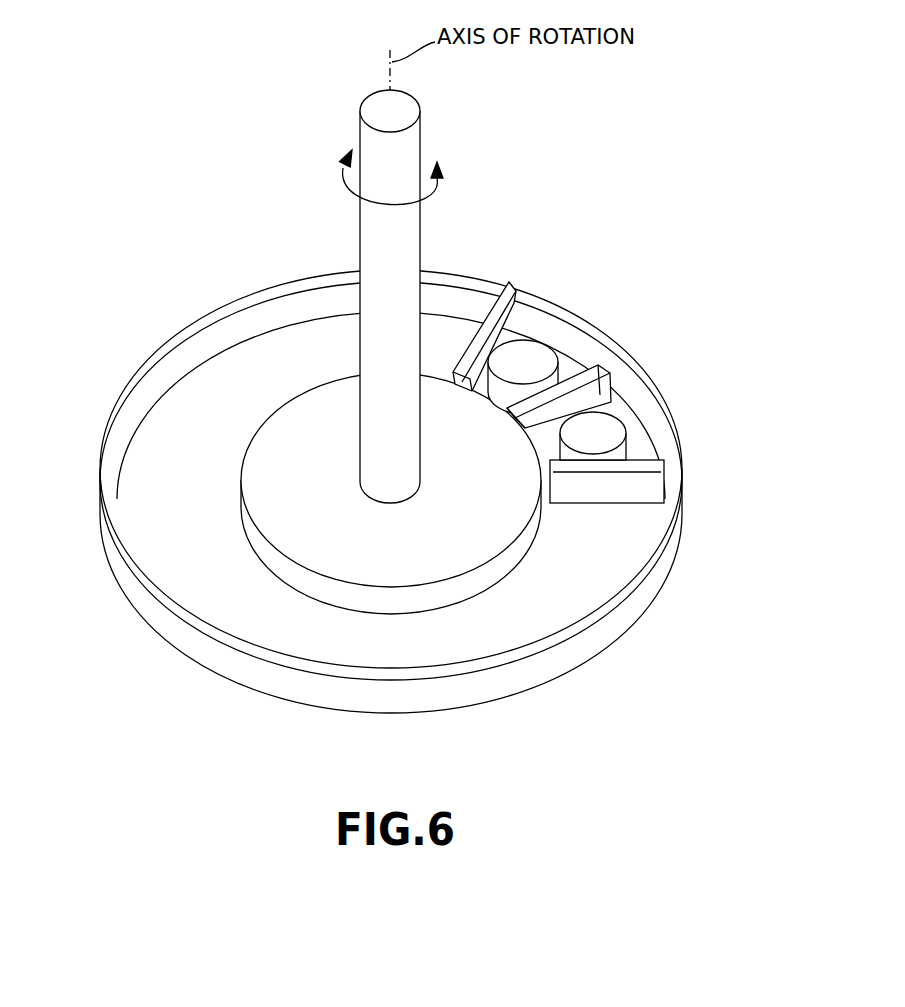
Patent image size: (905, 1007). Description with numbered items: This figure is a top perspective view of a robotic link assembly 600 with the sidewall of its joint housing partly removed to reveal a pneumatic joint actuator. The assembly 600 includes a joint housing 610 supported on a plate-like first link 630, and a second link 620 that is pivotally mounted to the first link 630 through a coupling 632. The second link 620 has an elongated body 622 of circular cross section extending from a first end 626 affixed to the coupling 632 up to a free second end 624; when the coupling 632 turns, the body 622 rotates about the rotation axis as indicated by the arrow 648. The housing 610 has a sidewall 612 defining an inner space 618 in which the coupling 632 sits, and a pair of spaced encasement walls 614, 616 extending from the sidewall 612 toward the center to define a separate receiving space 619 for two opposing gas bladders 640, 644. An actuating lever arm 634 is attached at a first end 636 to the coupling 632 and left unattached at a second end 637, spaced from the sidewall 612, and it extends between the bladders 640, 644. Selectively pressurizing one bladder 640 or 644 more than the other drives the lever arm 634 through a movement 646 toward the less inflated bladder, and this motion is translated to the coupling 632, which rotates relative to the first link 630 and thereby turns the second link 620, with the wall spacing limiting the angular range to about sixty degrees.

The robotic link assembly 600 is at (699, 182).
The joint housing 610 is at (705, 494).
The sidewall 612 is at (296, 696).
The encasement wall 614 is at (656, 456).
The encasement wall 616 is at (500, 305).
The inner space 618 is at (168, 385).
The receiving space 619 is at (585, 346).
The second link 620 is at (257, 262).
The body 622 is at (421, 237).
The second end 624 is at (421, 136).
The first end 626 is at (400, 472).
The first link 630 is at (182, 562).
The coupling 632 is at (298, 577).
The actuating lever arm 634 is at (616, 354).
The first end 636 is at (524, 412).
The second end 637 is at (606, 392).
The gas bladder 640 is at (540, 368).
The gas bladder 644 is at (627, 418).
The movement of the lever arm 646 is at (588, 412).
The rotation 648 is at (340, 195).